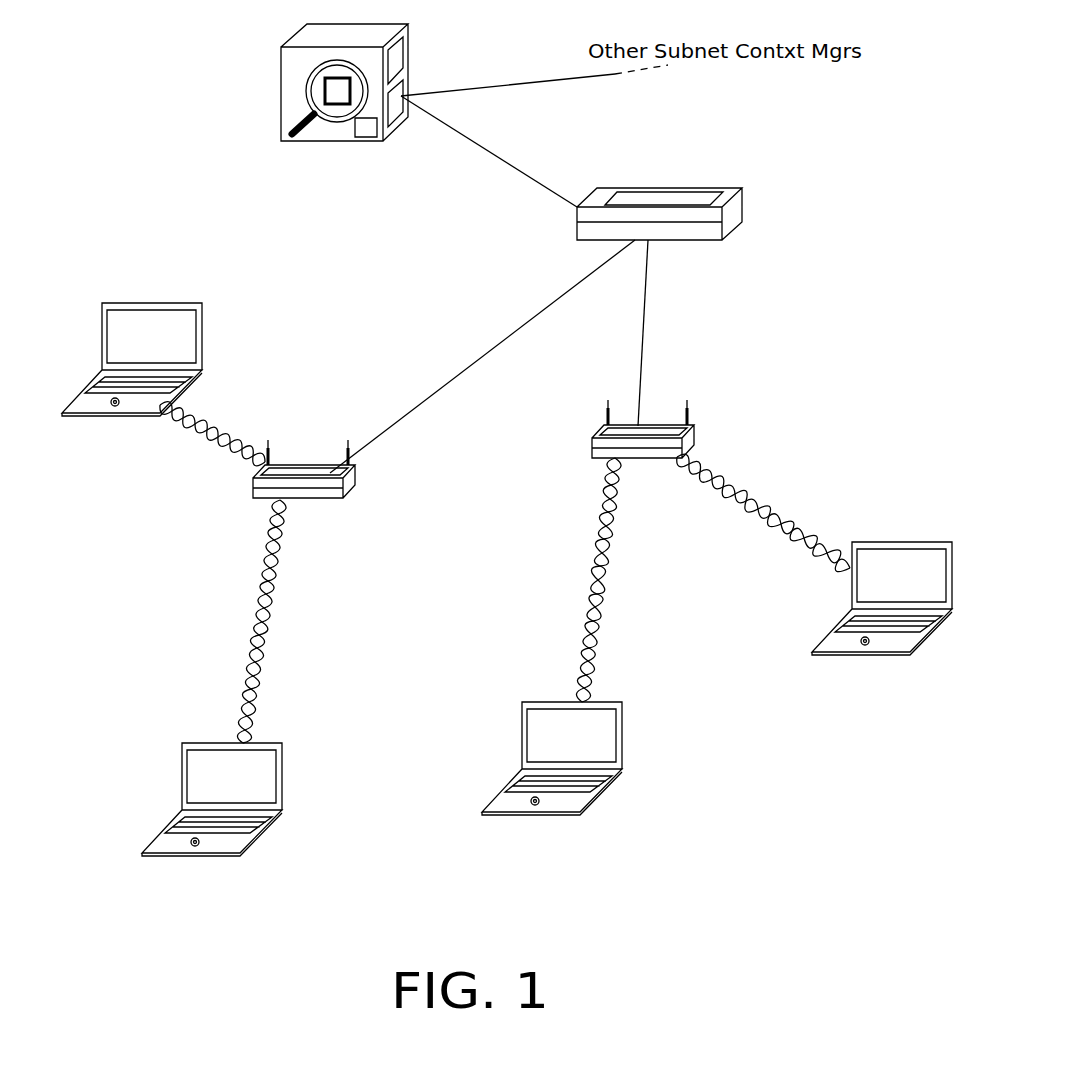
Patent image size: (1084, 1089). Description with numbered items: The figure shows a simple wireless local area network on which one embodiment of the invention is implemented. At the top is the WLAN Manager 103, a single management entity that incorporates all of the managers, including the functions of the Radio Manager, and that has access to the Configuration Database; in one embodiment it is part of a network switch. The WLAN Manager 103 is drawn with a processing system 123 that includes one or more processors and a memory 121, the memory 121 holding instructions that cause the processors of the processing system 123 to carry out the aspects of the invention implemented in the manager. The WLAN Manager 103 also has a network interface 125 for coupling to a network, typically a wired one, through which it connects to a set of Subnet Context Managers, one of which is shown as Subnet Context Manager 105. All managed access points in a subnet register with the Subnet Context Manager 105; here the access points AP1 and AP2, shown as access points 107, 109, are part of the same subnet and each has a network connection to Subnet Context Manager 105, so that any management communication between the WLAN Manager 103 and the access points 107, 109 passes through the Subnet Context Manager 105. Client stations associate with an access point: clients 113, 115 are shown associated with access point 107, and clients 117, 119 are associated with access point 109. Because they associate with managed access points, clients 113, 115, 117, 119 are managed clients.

The WLAN Manager 103 is at (349, 89).
The Subnet Context Manager 105 is at (585, 241).
The access point AP1 107 is at (323, 500).
The access point AP2 109 is at (693, 440).
The client 113 is at (277, 743).
The client 115 is at (170, 303).
The client 117 is at (828, 652).
The client 119 is at (505, 813).
The memory 121 is at (375, 137).
The processing system 123 is at (397, 62).
The network interface 125 is at (397, 100).